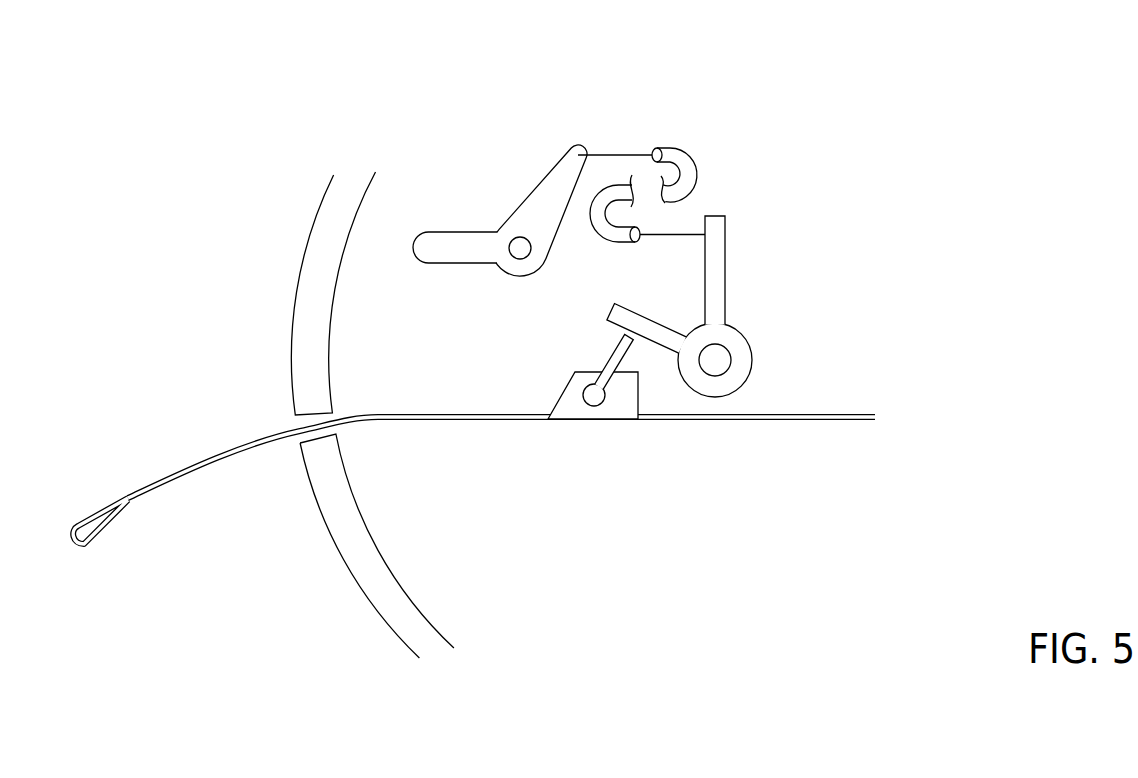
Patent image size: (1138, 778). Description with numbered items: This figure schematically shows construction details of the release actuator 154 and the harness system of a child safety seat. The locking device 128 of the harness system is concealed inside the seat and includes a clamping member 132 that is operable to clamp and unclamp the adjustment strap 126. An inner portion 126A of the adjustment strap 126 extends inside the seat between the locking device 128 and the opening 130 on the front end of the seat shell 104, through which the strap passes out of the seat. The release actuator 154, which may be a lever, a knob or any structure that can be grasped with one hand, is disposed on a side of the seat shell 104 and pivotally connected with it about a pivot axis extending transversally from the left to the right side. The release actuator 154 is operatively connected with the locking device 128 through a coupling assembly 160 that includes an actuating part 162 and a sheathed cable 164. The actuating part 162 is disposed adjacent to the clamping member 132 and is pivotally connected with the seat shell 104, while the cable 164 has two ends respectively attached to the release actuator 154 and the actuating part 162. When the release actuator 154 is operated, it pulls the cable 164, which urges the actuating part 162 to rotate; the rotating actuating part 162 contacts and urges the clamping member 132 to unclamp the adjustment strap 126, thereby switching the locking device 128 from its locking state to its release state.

The seat shell 104 is at (302, 265).
The adjustment strap 126 is at (474, 426).
The inner portion 126A is at (435, 420).
The locking device 128 is at (605, 435).
The opening 130 is at (282, 422).
The clamping member 132 is at (614, 360).
The release actuator 154 is at (552, 198).
The coupling assembly 160 is at (692, 213).
The actuating part 162 is at (725, 267).
The sheathed cable 164 is at (616, 150).